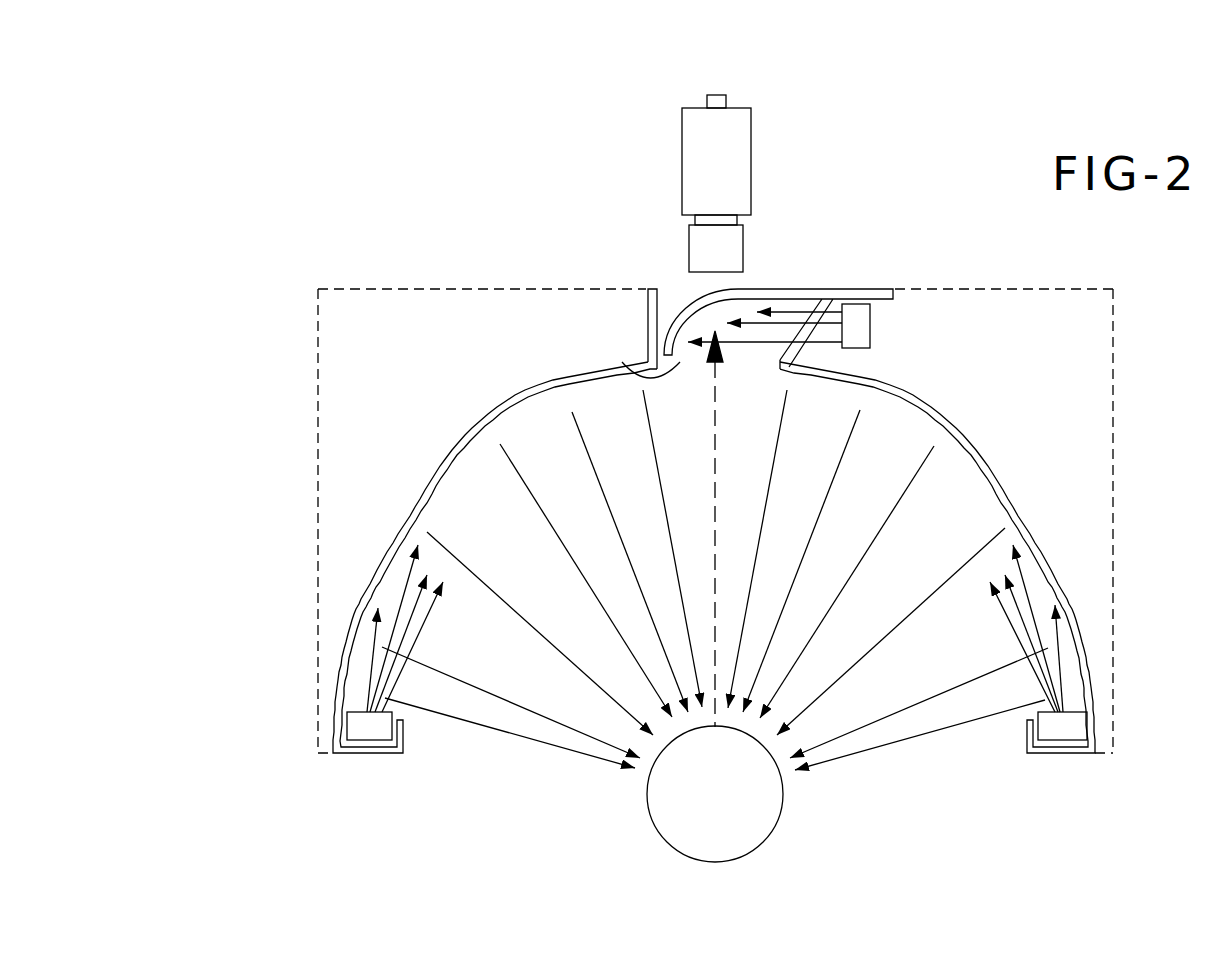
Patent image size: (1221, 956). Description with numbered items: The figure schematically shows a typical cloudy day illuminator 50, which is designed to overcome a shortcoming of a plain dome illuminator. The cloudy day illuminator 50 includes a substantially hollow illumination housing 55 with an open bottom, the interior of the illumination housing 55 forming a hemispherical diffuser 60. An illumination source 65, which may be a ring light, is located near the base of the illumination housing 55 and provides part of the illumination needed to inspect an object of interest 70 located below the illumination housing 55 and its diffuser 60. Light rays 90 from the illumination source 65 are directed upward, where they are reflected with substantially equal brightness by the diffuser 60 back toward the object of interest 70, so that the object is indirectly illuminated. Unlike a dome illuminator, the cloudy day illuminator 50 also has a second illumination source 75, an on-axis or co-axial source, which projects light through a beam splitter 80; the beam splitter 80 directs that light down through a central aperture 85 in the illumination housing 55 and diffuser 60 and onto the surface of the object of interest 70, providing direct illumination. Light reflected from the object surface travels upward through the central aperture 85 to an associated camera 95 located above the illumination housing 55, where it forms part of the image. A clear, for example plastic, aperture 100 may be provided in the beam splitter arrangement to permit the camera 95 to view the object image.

The cloudy day illuminator 50 is at (312, 216).
The illumination housing 55 is at (318, 516).
The hemispherical diffuser 60 is at (1057, 578).
The illumination source 65 is at (1060, 730).
The object of interest 70 is at (652, 818).
The second illumination source 75 is at (870, 325).
The beam splitter 80 is at (810, 325).
The central aperture 85 is at (632, 368).
The light rays 90 is at (468, 565).
The camera 95 is at (682, 142).
The clear aperture 100 is at (695, 302).